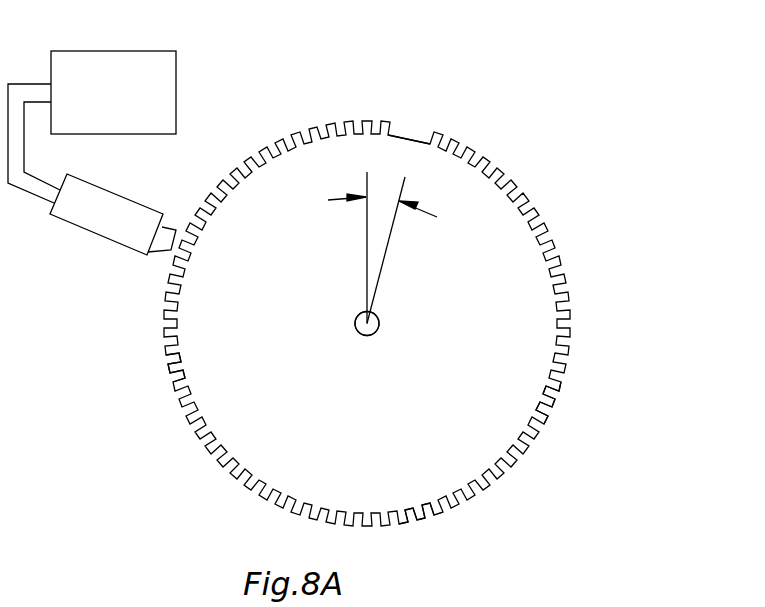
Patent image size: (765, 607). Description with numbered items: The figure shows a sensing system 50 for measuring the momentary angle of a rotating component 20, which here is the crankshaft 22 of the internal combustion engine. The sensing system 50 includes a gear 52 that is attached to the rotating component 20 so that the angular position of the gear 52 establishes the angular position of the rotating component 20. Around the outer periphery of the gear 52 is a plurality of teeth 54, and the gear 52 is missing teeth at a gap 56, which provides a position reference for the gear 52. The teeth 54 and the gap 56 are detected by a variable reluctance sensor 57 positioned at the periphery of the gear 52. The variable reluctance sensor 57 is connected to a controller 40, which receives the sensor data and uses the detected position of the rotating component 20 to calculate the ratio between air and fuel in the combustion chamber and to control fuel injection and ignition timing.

The controller 40 is at (116, 51).
The variable reluctance sensor 57 is at (100, 230).
The sensing system 50 is at (560, 122).
The gear 52 is at (508, 233).
The teeth 54 is at (188, 418).
The gap 56 is at (415, 138).
The crankshaft 22 is at (380, 323).
The rotating component 20 is at (367, 336).